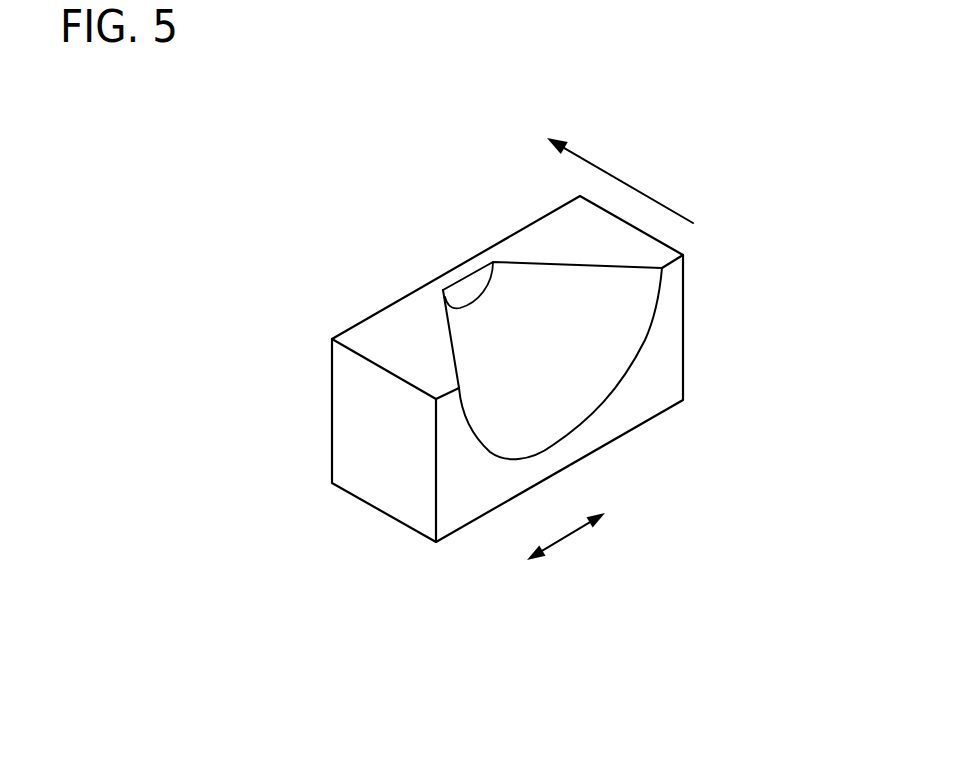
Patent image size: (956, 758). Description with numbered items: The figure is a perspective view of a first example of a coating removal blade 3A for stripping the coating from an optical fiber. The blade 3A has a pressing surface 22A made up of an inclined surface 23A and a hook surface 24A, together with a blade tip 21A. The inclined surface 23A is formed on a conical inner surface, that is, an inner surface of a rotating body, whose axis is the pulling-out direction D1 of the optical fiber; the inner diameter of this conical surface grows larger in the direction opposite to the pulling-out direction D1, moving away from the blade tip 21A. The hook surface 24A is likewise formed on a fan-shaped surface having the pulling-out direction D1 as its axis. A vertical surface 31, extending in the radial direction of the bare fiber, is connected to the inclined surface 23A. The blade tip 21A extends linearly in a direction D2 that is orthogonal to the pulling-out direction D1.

The coating removal blade 3A is at (532, 306).
The blade tip 21A is at (467, 265).
The pressing surface 22A is at (618, 322).
The inclined surface 23A is at (470, 366).
The hook surface 24A is at (477, 284).
The vertical surface 31 is at (650, 396).
The pulling-out direction D1 is at (620, 181).
The direction of blade tip extension D2 is at (567, 537).